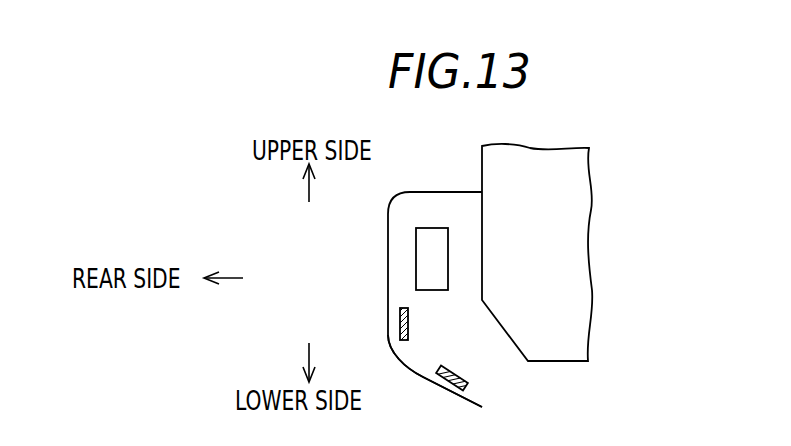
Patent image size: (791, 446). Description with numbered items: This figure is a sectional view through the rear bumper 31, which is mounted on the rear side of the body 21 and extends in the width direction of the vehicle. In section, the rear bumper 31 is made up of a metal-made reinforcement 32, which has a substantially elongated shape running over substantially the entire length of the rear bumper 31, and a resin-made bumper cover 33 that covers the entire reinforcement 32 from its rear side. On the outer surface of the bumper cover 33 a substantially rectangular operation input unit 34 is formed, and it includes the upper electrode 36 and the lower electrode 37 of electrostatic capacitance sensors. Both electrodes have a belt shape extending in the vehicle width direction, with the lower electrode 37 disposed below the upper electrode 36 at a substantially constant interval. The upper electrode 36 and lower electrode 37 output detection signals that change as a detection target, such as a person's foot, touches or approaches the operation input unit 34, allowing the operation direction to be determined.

The body 21 is at (514, 252).
The rear bumper 31 is at (392, 299).
The reinforcement 32 is at (394, 259).
The bumper cover 33 is at (411, 299).
The operation input unit 34 is at (435, 374).
The upper electrode 36 is at (426, 324).
The lower electrode 37 is at (468, 372).